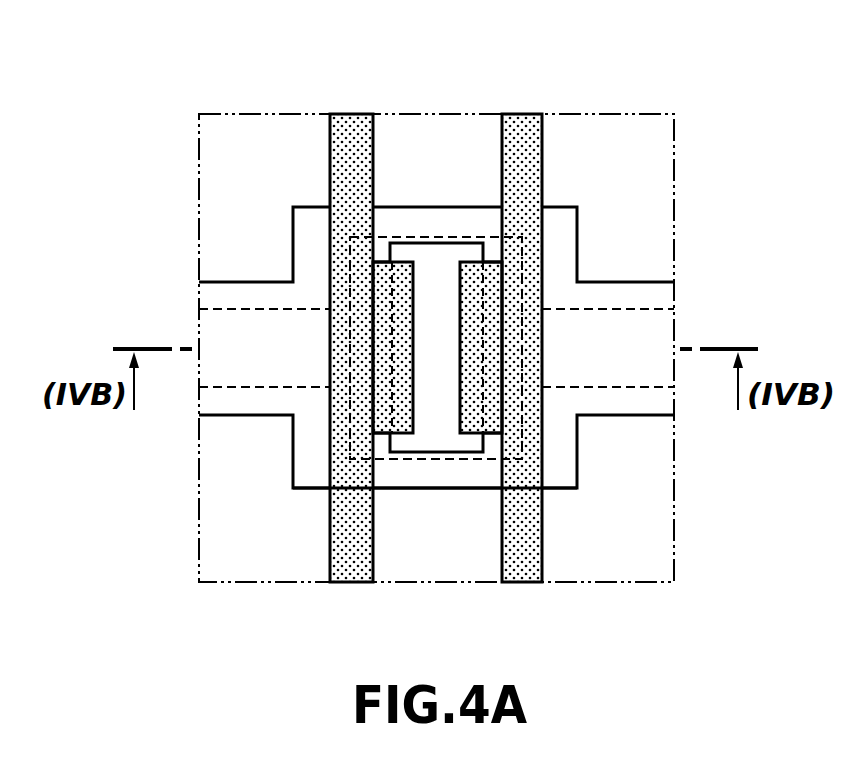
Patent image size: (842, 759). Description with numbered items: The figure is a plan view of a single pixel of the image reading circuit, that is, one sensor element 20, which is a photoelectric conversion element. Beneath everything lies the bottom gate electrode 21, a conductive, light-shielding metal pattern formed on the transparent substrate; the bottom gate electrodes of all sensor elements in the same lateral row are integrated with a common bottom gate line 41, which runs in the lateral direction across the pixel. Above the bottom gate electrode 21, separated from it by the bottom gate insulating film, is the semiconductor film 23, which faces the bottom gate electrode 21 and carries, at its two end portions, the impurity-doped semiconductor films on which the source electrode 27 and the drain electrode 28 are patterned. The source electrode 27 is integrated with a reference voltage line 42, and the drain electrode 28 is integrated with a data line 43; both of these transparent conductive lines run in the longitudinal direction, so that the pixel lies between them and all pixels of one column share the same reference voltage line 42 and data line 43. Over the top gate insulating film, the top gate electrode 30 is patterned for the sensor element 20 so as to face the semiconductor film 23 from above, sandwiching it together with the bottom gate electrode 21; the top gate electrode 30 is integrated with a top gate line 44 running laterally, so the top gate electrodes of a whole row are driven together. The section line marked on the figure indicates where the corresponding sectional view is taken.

The sensor element 20 is at (666, 96).
The bottom gate electrode 21 is at (397, 237).
The semiconductor film 23 is at (453, 245).
The source electrode 27 is at (542, 320).
The drain electrode 28 is at (330, 323).
The top gate electrode 30 is at (307, 489).
The bottom gate line 41 is at (257, 309).
The reference voltage line 42 is at (542, 152).
The data line 43 is at (330, 152).
The top gate line 44 is at (253, 415).